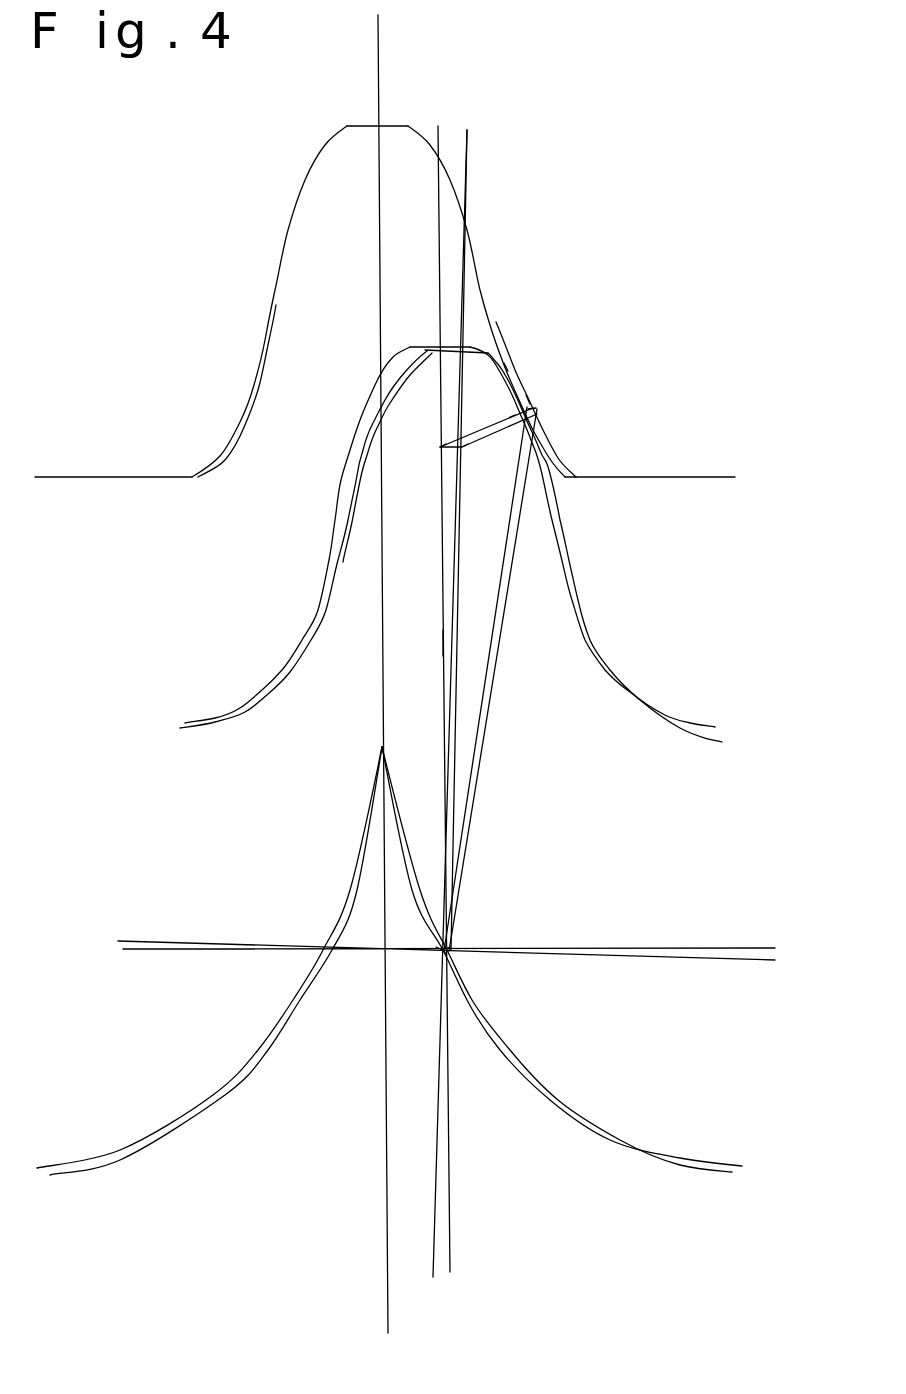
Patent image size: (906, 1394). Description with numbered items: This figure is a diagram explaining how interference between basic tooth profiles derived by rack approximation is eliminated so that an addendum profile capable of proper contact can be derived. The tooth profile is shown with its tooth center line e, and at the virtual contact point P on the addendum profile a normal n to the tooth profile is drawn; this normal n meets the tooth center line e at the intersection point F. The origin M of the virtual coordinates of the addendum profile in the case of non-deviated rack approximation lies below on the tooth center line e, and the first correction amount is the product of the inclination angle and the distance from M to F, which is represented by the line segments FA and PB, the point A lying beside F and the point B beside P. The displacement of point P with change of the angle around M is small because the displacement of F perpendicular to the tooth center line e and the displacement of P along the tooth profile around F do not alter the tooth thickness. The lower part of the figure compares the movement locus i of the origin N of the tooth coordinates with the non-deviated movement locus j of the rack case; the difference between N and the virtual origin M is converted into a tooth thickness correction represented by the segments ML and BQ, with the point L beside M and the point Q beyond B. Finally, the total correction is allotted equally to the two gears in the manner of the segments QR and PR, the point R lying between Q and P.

The intersection point F is at (440, 447).
The point A is at (462, 447).
The normal to the tooth profile n is at (472, 433).
The virtual contact point P is at (515, 408).
The point B is at (536, 408).
The point Q is at (528, 405).
The point R is at (522, 380).
The tooth center line e is at (441, 567).
The point L is at (441, 949).
The origin of the virtual coordinates M is at (447, 950).
The origin of the coordinates N is at (441, 955).
The movement locus i is at (540, 1077).
The non-deviated movement locus j is at (537, 1082).